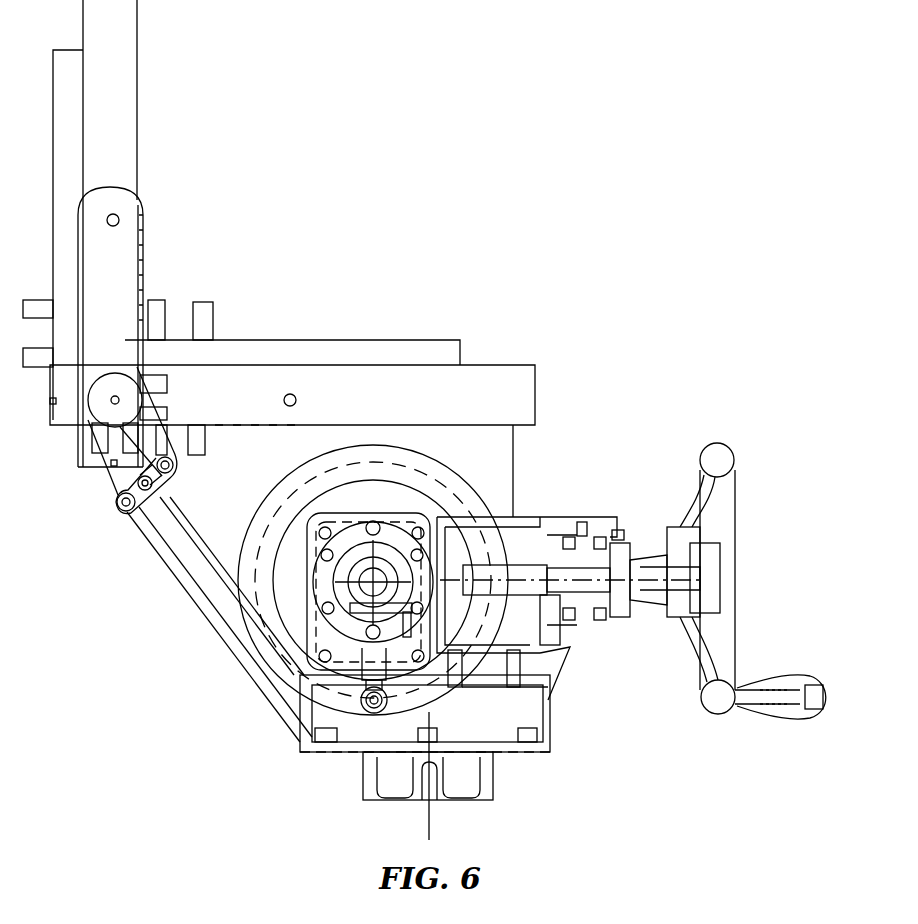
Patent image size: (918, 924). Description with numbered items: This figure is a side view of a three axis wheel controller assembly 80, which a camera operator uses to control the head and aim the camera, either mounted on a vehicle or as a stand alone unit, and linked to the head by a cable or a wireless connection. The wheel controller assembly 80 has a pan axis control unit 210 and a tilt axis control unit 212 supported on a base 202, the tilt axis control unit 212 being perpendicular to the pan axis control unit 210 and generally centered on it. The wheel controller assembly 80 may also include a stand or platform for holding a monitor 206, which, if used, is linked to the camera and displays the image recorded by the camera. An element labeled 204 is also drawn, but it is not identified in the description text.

The wheel controller assembly 80 is at (585, 393).
The base 202 is at (550, 722).
The horizontal beam 204 is at (232, 383).
The remote monitor 206 is at (120, 101).
The pan axis control unit 210 is at (275, 612).
The tilt axis control unit 212 is at (557, 525).